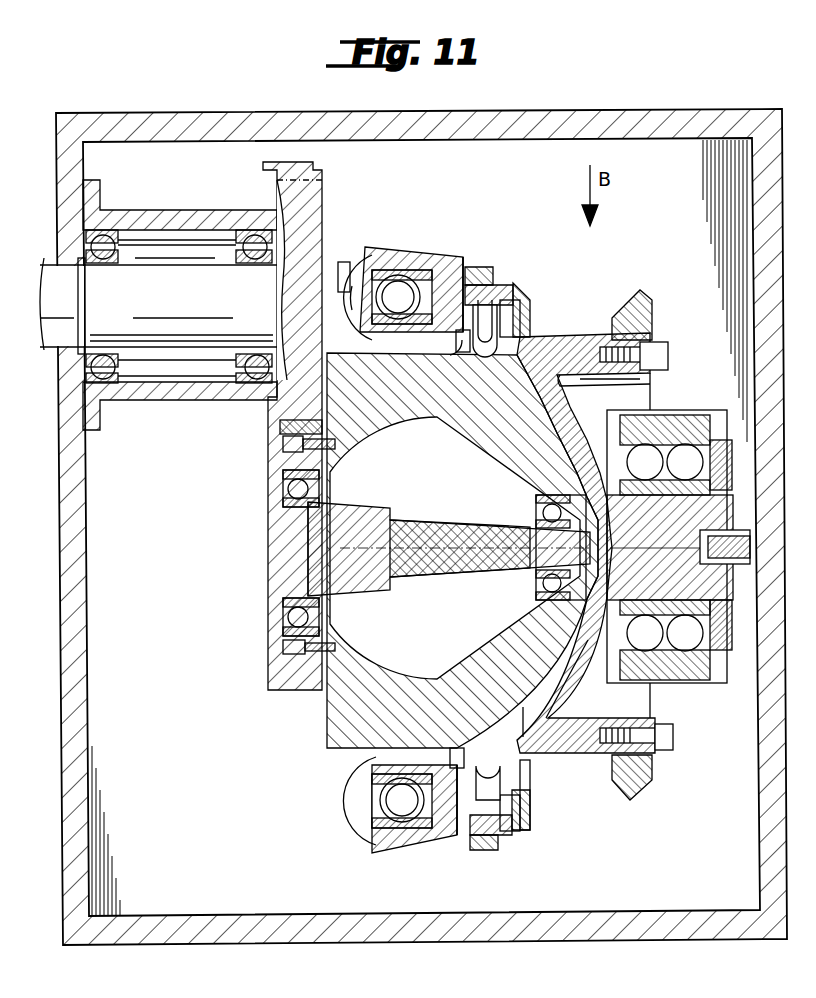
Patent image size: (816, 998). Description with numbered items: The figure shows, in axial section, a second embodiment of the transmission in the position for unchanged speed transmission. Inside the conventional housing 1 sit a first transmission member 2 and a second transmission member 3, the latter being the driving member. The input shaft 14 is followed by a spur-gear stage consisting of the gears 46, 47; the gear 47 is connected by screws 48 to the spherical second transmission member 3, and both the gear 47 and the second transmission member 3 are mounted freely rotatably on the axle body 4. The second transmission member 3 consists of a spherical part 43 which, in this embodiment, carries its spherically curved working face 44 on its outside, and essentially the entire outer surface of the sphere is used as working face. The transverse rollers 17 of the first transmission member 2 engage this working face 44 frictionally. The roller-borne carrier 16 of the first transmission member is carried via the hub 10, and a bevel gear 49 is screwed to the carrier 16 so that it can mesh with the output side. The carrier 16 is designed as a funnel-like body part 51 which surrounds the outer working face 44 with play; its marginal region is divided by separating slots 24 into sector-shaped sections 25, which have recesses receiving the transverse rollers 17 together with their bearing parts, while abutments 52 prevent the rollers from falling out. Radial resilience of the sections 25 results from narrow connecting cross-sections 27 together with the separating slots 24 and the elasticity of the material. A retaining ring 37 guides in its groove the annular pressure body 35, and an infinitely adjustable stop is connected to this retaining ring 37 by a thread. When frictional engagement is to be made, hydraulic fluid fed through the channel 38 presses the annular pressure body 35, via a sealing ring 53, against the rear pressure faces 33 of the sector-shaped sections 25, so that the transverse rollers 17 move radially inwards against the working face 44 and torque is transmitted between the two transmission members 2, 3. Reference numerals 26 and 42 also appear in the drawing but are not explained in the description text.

The housing 1 is at (86, 628).
The first transmission member 2 is at (398, 535).
The second transmission member 3 is at (432, 430).
The axle body 4 is at (270, 560).
The hub 10 is at (708, 683).
The input shaft 14 is at (145, 325).
The carrier 16 is at (563, 333).
The transverse rollers 17 is at (378, 262).
The separating slots 24 is at (462, 760).
The sector-shaped sections 25 is at (426, 250).
The retainer 26 is at (522, 300).
The connecting cross-sections 27 is at (500, 322).
The rear pressure faces 33 is at (464, 262).
The annular pressure body 35 is at (500, 285).
The retaining ring 37 is at (518, 820).
The channel 38 is at (556, 716).
The insert 42 is at (490, 268).
The hollow spherical part 43 is at (404, 413).
The working face 44 is at (567, 387).
The gear 46 is at (284, 410).
The gear 47 is at (282, 444).
The screws 48 is at (283, 456).
The bevel gear 49 is at (642, 782).
The funnel-like body part 51 is at (585, 355).
The abutments 52 is at (366, 278).
The sealing ring 53 is at (522, 285).